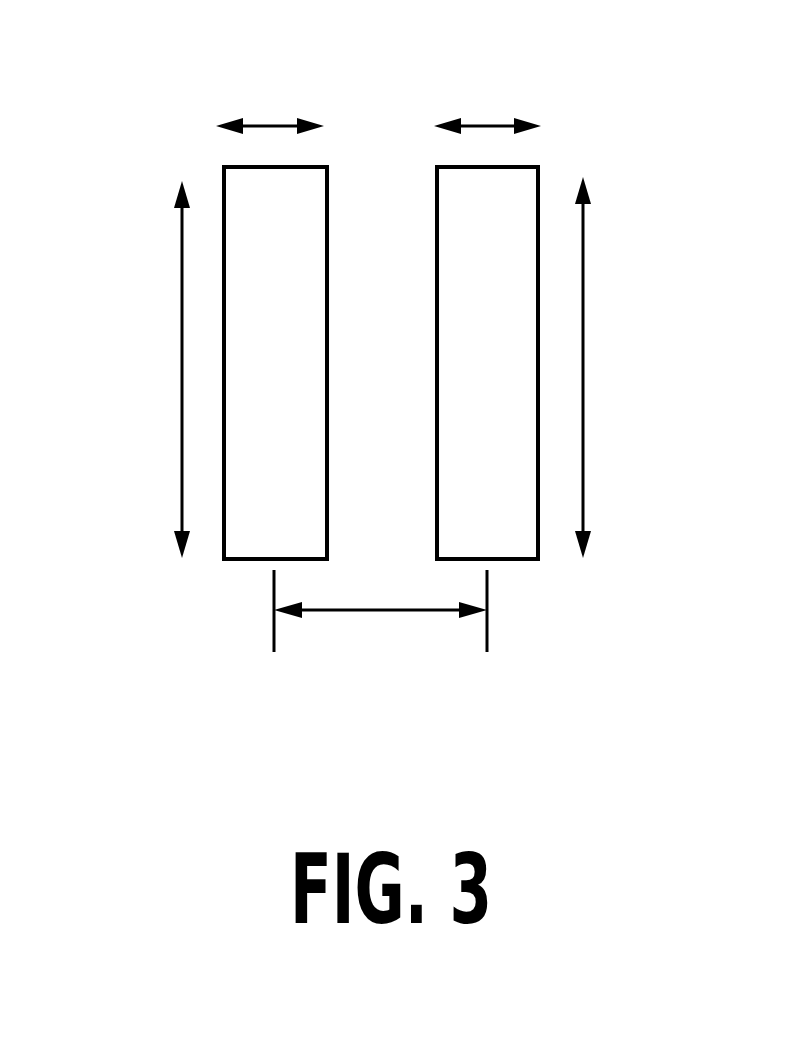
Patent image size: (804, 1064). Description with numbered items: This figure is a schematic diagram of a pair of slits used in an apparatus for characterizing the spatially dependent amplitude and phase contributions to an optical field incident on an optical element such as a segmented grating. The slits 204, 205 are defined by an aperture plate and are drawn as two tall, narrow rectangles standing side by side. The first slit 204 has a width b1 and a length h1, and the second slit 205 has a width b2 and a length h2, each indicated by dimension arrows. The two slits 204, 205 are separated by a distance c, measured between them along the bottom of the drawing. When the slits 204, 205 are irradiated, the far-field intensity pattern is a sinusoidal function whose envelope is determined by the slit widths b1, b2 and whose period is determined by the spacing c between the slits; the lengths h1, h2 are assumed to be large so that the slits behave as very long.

The slit 204 is at (192, 404).
The slit 205 is at (567, 404).
The width of first slit b1 is at (270, 67).
The width of second slit b2 is at (487, 67).
The length of first slit h1 is at (128, 369).
The length of second slit h2 is at (647, 367).
The slit separation distance c is at (380, 642).